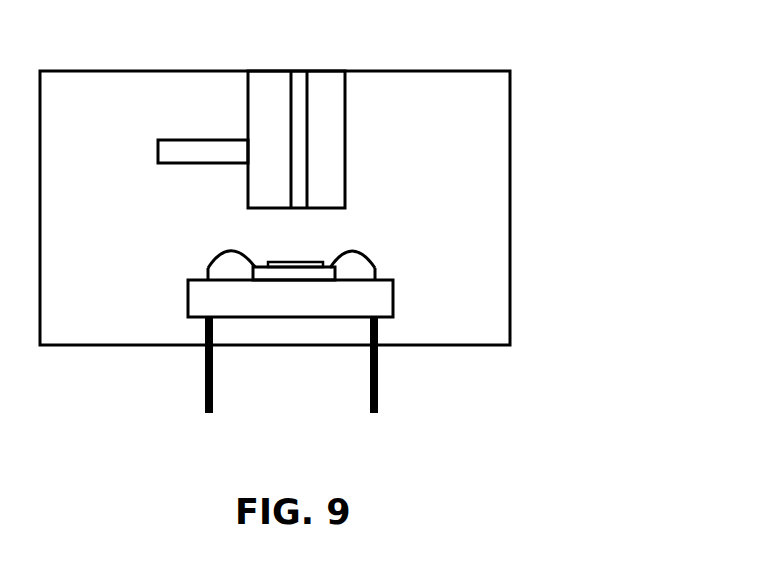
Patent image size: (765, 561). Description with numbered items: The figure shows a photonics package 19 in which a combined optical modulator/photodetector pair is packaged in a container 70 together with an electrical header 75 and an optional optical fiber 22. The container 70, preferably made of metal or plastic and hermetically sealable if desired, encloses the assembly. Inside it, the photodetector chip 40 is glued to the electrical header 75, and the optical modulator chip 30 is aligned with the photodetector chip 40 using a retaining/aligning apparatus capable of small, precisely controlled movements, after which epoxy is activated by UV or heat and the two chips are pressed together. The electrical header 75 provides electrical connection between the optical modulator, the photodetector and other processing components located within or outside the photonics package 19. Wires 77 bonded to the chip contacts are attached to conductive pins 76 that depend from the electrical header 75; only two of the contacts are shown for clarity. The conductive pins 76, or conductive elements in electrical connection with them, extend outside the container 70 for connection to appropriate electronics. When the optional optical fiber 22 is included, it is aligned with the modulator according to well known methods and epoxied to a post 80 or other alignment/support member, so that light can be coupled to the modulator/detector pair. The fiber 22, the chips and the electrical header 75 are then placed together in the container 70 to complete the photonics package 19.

The photonics package 19 is at (545, 200).
The optical fiber 22 is at (345, 173).
The optical modulator chip 30 is at (308, 262).
The photodetector chip 40 is at (260, 266).
The container 70 is at (510, 72).
The electrical header 75 is at (190, 307).
The conductive pins 76 is at (205, 378).
The wires 77 is at (207, 257).
The post 80 is at (167, 140).